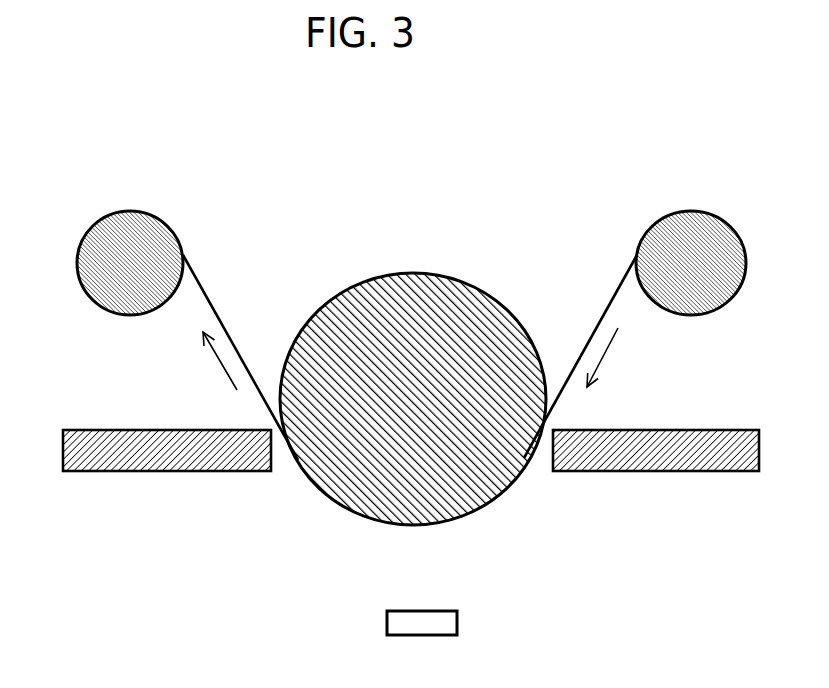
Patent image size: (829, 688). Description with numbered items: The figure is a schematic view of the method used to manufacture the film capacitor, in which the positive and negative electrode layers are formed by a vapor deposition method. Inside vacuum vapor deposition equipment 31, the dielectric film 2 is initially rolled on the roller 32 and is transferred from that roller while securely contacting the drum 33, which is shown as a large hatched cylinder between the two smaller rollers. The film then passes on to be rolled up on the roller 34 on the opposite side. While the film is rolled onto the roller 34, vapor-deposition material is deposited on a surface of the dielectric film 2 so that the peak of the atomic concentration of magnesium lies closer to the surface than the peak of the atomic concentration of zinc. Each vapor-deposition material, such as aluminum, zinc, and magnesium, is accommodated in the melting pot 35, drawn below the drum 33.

The dielectric film 2 is at (618, 285).
The vacuum vapor deposition equipment 31 is at (306, 199).
The roller 32 is at (692, 233).
The drum 33 is at (404, 298).
The roller 34 is at (120, 247).
The melting pot 35 is at (387, 622).